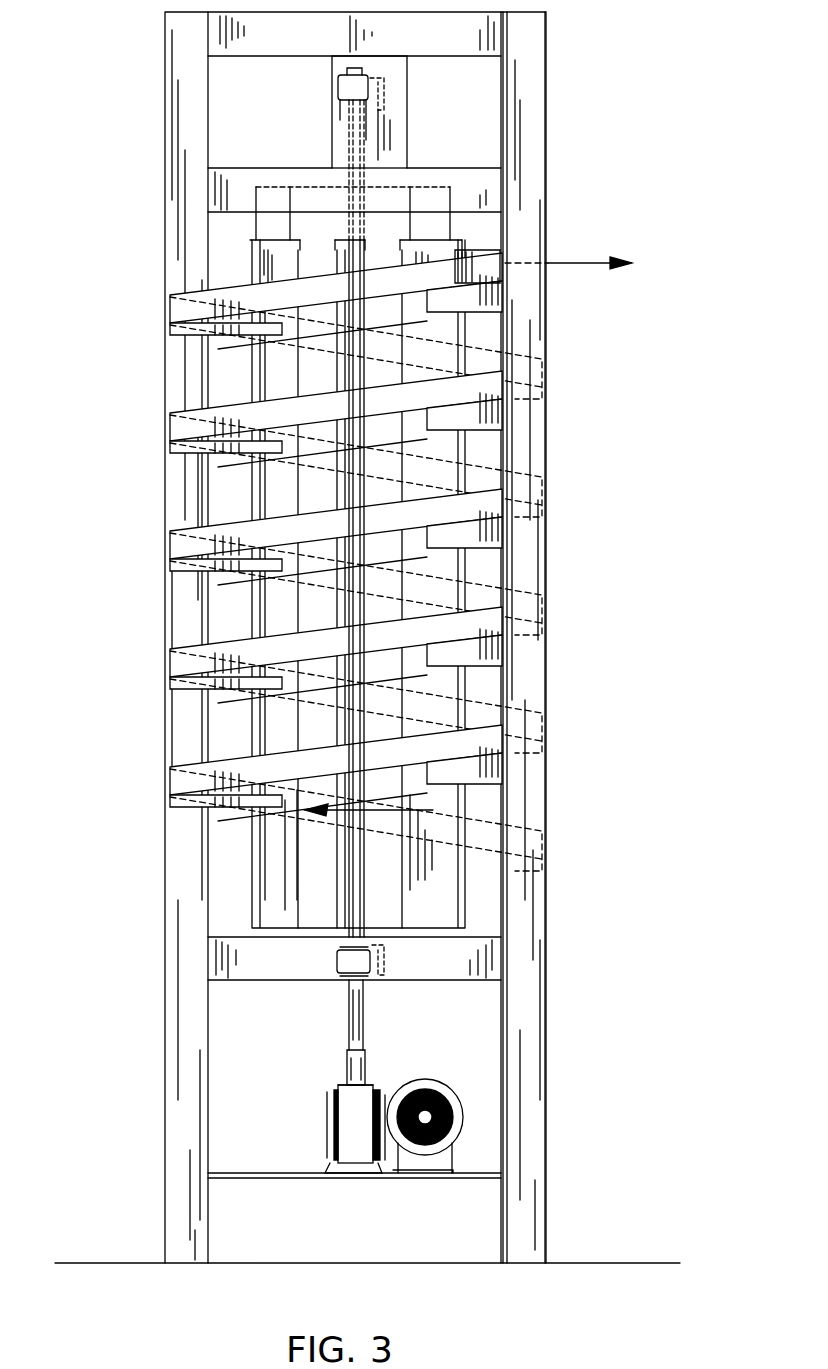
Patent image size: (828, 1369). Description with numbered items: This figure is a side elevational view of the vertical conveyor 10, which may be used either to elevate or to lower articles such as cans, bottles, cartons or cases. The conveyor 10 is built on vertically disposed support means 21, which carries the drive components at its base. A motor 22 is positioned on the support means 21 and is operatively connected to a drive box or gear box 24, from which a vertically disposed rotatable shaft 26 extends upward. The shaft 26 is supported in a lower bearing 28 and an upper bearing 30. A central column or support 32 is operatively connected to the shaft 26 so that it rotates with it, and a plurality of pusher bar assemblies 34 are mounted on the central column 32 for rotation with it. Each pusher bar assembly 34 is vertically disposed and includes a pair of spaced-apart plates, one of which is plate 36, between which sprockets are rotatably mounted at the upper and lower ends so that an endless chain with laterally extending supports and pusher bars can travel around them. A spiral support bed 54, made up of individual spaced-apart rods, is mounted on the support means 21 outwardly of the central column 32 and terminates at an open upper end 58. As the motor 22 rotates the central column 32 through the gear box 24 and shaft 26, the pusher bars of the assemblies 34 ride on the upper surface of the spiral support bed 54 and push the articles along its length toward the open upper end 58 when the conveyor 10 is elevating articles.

The vertical conveyor 10 is at (568, 525).
The support means 21 is at (552, 915).
The motor 22 is at (463, 1107).
The drive box or gear box 24 is at (327, 1140).
The rotatable shaft 26 is at (363, 1035).
The bearing 28 is at (353, 958).
The bearing 30 is at (337, 87).
The central column or support 32 is at (403, 185).
The pusher bar assembly 34 is at (285, 718).
The plate 36 is at (283, 817).
The spiral support bed 54 is at (525, 730).
The open upper end 58 is at (485, 265).